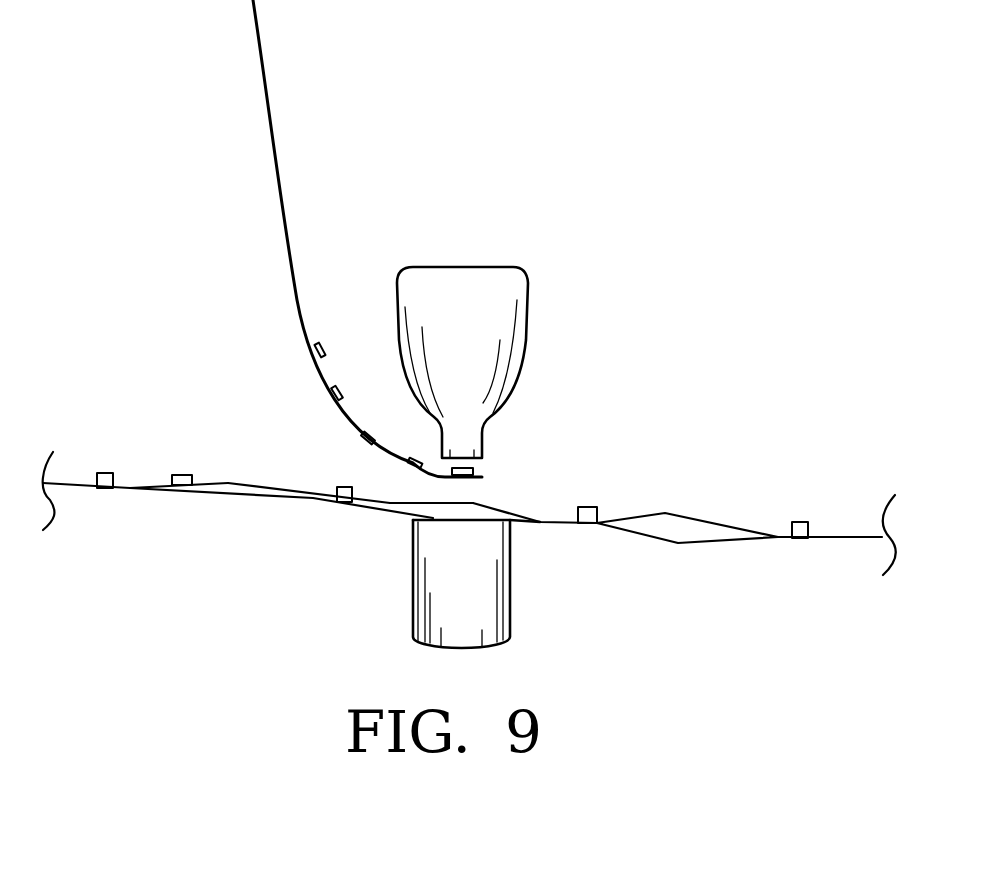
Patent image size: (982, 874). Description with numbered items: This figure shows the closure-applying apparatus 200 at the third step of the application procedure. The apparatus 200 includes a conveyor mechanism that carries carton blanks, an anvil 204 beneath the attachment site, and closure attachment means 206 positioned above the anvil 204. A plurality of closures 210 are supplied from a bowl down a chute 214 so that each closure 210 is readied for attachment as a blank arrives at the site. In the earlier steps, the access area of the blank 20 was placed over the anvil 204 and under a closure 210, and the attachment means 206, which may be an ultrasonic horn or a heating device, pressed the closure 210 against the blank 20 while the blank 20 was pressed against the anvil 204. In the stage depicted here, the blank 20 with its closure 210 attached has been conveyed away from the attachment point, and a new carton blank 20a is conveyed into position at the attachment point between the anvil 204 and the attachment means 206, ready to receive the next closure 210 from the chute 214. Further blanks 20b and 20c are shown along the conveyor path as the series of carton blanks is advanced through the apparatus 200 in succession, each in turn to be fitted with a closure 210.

The apparatus for applying closures 200 is at (553, 152).
The blank 20 is at (233, 485).
The new carton blank 20a is at (533, 513).
The pocket plate 20b is at (725, 525).
The pocket plate 20c is at (370, 432).
The anvil 204 is at (483, 615).
The closure attachment means 206 is at (492, 303).
The closure 210 is at (180, 475).
The chute 214 is at (297, 300).